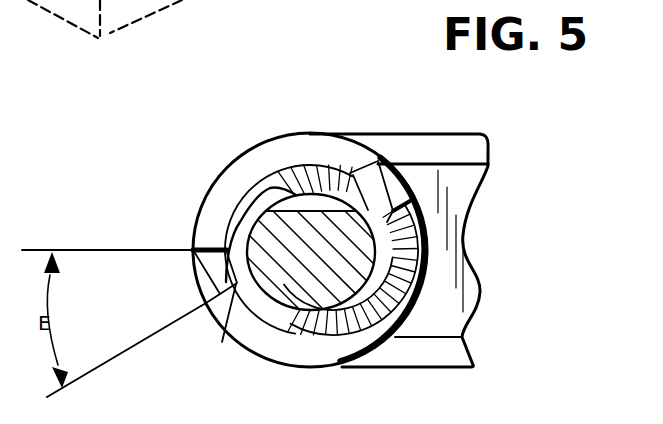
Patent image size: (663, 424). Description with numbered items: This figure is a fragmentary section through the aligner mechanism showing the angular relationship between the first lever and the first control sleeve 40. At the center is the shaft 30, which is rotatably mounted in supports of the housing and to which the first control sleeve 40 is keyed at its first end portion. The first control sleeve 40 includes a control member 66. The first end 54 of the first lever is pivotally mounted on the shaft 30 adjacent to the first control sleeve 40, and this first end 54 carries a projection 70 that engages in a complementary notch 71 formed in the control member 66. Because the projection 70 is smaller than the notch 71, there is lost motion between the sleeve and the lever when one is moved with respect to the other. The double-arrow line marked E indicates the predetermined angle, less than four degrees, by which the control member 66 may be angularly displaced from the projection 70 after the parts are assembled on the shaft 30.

The first control sleeve 40 is at (277, 135).
The control member 66 is at (246, 177).
The first end of first lever 54 is at (237, 220).
The shaft 30 is at (318, 293).
The notch 71 is at (197, 281).
The projection 70 is at (222, 342).